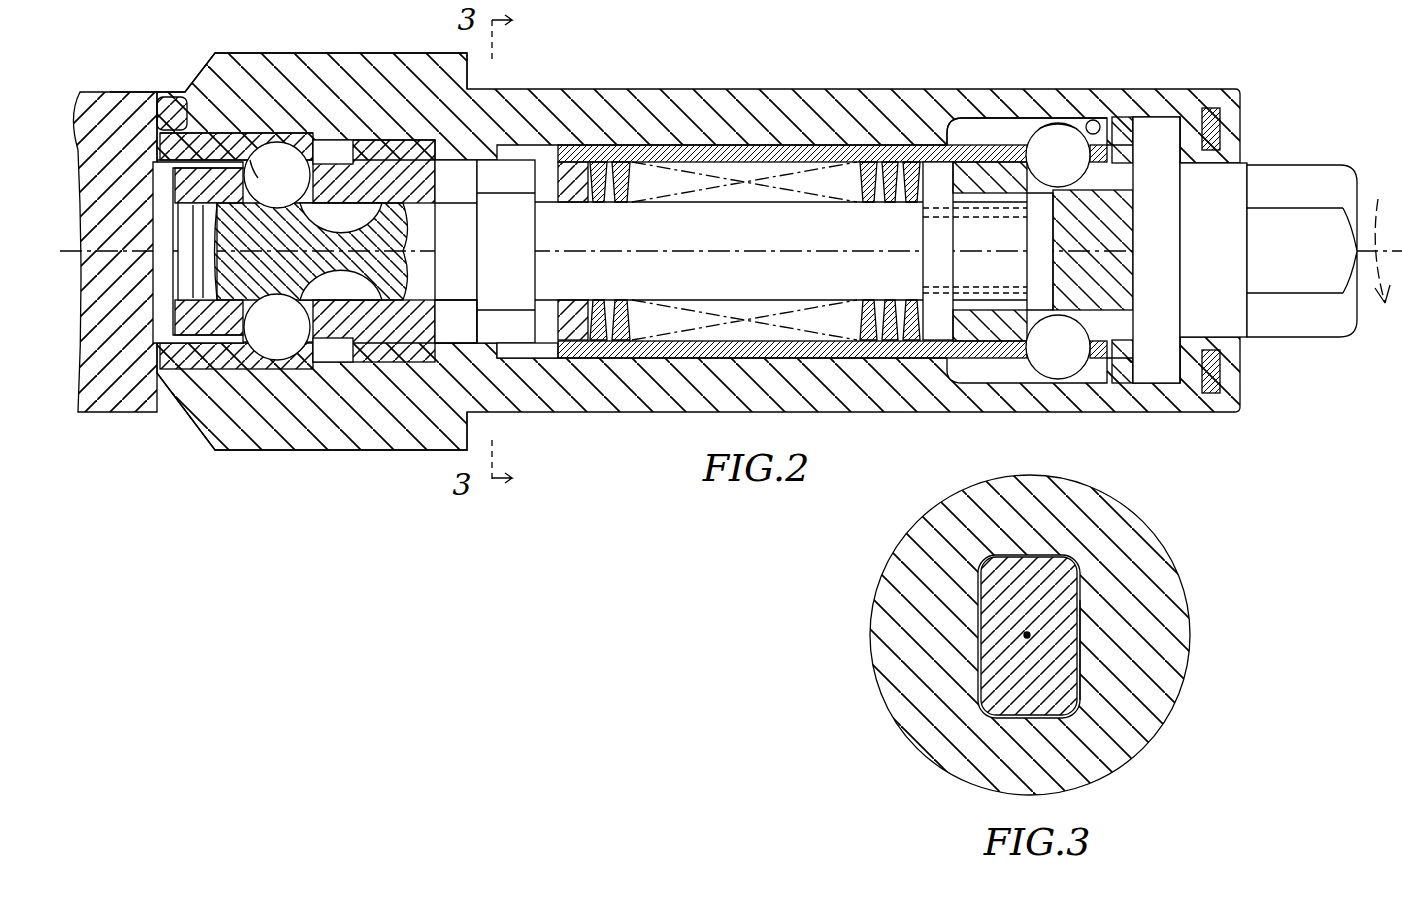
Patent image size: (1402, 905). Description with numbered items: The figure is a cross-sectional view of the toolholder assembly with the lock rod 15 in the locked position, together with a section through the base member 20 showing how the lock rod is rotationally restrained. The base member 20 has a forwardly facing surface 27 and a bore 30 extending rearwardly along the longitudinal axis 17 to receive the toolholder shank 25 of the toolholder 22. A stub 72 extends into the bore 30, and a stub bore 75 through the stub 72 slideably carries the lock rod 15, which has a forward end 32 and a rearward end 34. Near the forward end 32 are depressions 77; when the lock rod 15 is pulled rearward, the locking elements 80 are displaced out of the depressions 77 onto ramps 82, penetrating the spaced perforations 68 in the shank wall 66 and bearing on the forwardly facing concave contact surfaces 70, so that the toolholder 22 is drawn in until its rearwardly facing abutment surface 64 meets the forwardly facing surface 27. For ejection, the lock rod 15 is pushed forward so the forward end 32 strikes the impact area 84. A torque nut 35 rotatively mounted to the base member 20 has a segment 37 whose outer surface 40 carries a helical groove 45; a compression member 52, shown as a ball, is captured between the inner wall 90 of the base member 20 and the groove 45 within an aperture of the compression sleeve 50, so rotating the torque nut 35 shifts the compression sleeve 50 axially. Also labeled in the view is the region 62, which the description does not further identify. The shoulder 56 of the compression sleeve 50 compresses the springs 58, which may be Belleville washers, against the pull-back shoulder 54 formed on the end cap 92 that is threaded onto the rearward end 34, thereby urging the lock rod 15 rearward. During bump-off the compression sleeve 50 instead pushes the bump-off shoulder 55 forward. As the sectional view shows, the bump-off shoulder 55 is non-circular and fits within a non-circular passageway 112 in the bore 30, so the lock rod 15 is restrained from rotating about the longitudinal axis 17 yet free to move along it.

In FIG. 2, the lock rod 15 is at (460, 240).
In FIG. 2, the longitudinal axis 17 is at (597, 240).
In FIG. 3, the longitudinal axis 17 is at (1020, 638).
In FIG. 2, the base member 20 is at (768, 103).
In FIG. 3, the base member 20 is at (1160, 548).
In FIG. 2, the toolholder 22 is at (104, 92).
In FIG. 2, the toolholder shank 25 is at (340, 145).
In FIG. 2, the forwardly facing surface 27 is at (138, 92).
In FIG. 2, the bore 30 is at (190, 100).
In FIG. 3, the bore 30 is at (992, 558).
In FIG. 2, the forward end 32 is at (190, 270).
In FIG. 2, the rearward end 34 is at (1058, 251).
In FIG. 2, the torque nut 35 is at (1280, 165).
In FIG. 2, the segment 37 is at (1180, 185).
In FIG. 2, the outer surface 40 is at (1133, 175).
In FIG. 2, the groove 45 is at (1098, 195).
In FIG. 2, the compression sleeve 50 is at (684, 145).
In FIG. 2, the compression member 52 is at (1068, 124).
In FIG. 2, the pull-back shoulder 54 is at (936, 162).
In FIG. 2, the bump-off shoulder 55 is at (510, 358).
In FIG. 3, the bump-off shoulder 55 is at (1048, 575).
In FIG. 2, the shoulder 56 is at (573, 162).
In FIG. 2, the springs 58 is at (605, 162).
In FIG. 2, the cavity 62 is at (895, 145).
In FIG. 2, the rearwardly facing abutment surface 64 is at (166, 97).
In FIG. 2, the shank wall 66 is at (283, 133).
In FIG. 2, the spaced perforations 68 is at (268, 133).
In FIG. 2, the forwardly facing concave contact surfaces 70 is at (277, 251).
In FIG. 2, the stub 72 is at (378, 140).
In FIG. 2, the stub bore 75 is at (412, 203).
In FIG. 2, the depressions 77 is at (350, 218).
In FIG. 2, the locking elements 80 is at (255, 160).
In FIG. 2, the ramps 82 is at (240, 182).
In FIG. 2, the impact area 84 is at (153, 176).
In FIG. 2, the inner wall 90 is at (1093, 120).
In FIG. 2, the end cap 92 is at (960, 270).
In FIG. 2, the non-circular passageway 112 is at (455, 318).
In FIG. 3, the non-circular passageway 112 is at (1080, 680).